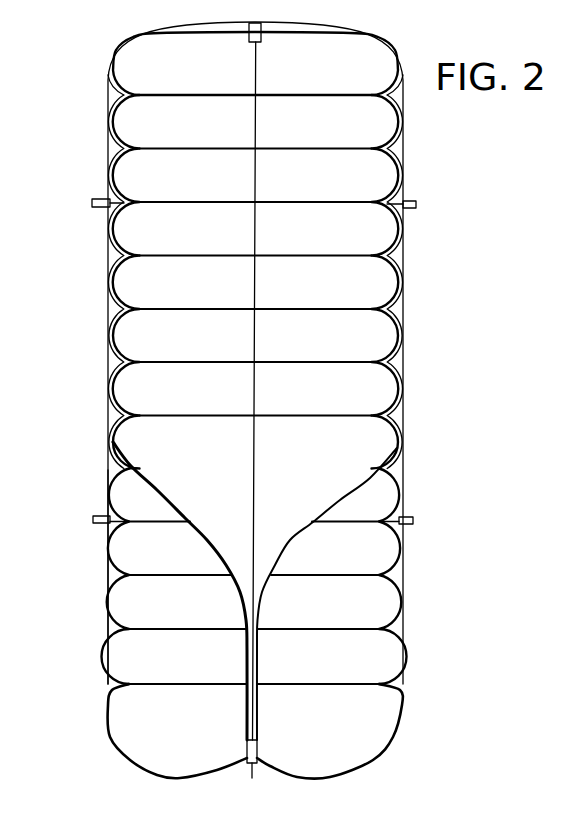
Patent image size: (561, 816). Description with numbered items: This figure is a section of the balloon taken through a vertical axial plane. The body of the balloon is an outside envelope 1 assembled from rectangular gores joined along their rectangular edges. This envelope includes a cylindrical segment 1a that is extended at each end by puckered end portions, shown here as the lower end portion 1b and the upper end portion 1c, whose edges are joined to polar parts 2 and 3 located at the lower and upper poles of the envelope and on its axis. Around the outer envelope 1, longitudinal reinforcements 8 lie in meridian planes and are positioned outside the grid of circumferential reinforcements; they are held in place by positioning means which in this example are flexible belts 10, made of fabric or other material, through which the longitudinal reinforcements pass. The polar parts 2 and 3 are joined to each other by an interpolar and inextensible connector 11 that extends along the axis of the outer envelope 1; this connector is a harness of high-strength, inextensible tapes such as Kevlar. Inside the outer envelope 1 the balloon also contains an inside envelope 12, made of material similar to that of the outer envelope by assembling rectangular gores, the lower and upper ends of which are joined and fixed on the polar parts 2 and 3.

The outside envelope 1 is at (100, 637).
The cylindrical segment 1a is at (108, 553).
The bottom portion of balloon 1b is at (213, 772).
The top portion of balloon 1c is at (176, 36).
The polar part 2 is at (258, 756).
The polar part 3 is at (262, 33).
The longitudinal reinforcement 8 is at (405, 318).
The flexible belt 10 is at (92, 202).
The interpolar inextensible connector 11 is at (258, 236).
The inside envelope 12 is at (117, 278).